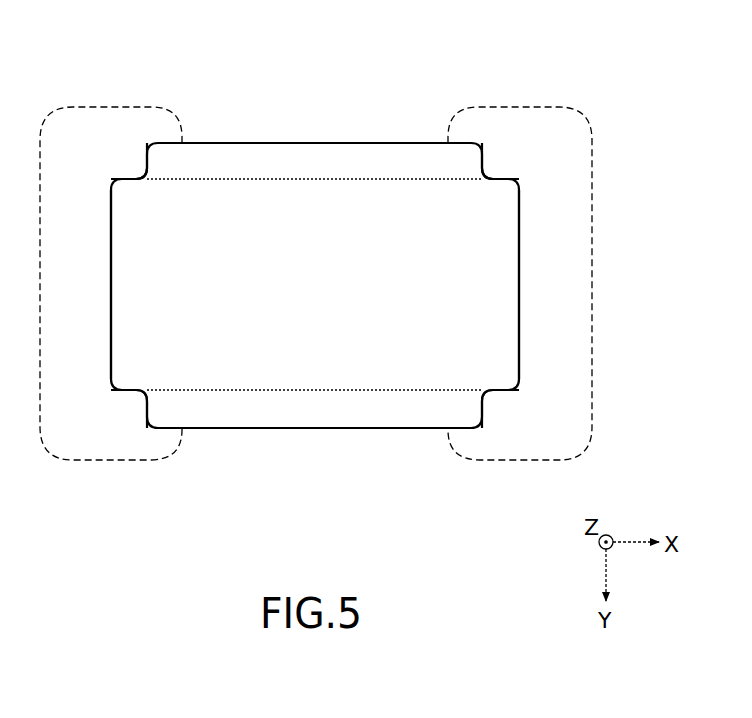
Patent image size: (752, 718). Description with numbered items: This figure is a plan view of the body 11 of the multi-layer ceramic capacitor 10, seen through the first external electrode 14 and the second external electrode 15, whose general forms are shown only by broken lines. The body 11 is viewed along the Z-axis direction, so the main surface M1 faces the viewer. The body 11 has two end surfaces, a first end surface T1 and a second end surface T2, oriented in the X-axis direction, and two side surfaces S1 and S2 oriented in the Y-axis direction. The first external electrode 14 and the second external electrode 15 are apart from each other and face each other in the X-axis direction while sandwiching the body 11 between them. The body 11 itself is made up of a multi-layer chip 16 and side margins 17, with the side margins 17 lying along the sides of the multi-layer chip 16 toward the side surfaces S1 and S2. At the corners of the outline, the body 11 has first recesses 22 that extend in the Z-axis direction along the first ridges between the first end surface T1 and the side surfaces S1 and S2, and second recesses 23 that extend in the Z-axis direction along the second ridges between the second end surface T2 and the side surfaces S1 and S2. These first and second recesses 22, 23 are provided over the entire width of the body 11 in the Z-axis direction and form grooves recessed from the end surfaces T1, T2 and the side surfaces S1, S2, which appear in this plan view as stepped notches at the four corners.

The multi-layer ceramic capacitor 10 is at (171, 52).
The body 11 is at (357, 103).
The first external electrode 14 is at (108, 462).
The second external electrode 15 is at (517, 462).
The multi-layer chip 16 is at (326, 299).
The side margins 17 is at (318, 160).
The first recesses 22 is at (124, 158).
The second recesses 23 is at (509, 152).
The side surface S1 is at (242, 430).
The side surface S2 is at (222, 142).
The first end surface T1 is at (109, 300).
The second end surface T2 is at (520, 298).
The main surface M1 is at (250, 295).